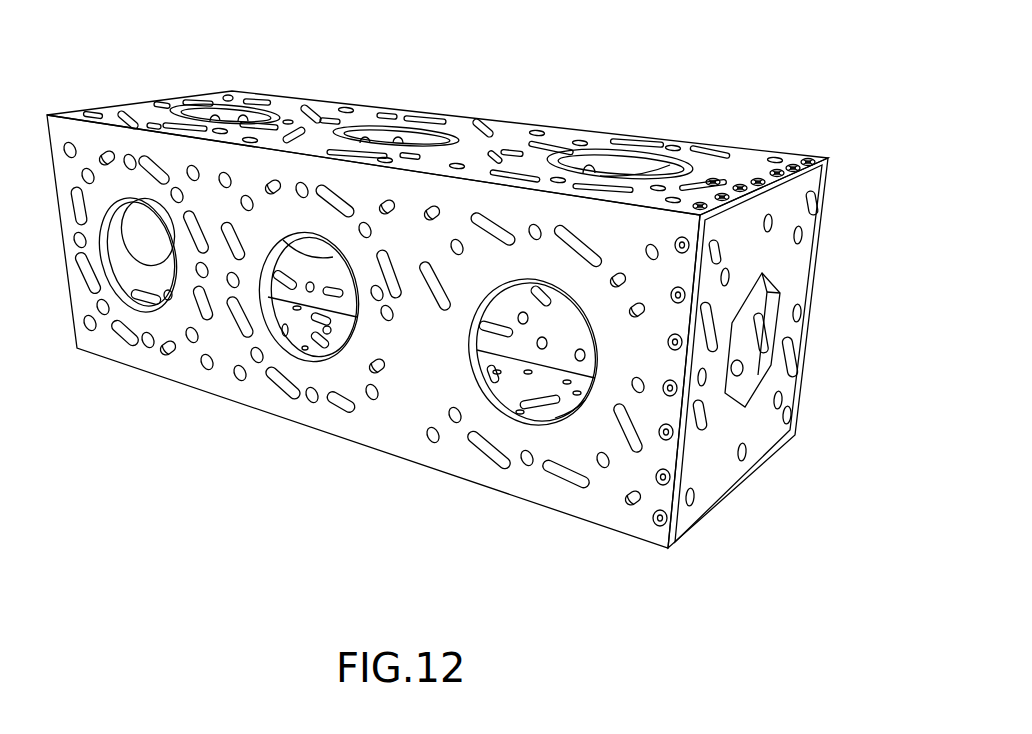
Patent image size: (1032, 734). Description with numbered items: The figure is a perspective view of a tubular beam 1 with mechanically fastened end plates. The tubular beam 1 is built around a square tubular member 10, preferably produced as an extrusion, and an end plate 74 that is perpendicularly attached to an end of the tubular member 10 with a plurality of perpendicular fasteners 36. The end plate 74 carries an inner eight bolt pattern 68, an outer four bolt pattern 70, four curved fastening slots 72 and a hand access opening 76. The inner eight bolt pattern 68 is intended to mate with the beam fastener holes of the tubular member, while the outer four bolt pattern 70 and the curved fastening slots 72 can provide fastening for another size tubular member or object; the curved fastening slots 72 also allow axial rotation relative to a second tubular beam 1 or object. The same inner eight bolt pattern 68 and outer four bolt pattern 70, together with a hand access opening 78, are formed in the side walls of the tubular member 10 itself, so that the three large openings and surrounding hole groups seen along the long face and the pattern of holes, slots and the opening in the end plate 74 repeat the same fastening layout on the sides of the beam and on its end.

The tubular beam 1 is at (446, 93).
The tubular member 10 is at (507, 478).
The perpendicular fasteners 36 is at (652, 522).
The inner eight bolt pattern 68 is at (314, 403).
The outer four bolt pattern 70 is at (236, 378).
The curved fastening slots 72 is at (272, 390).
The end plate 74 is at (742, 420).
The hand access opening 76 is at (776, 344).
The hand access opening 78 is at (262, 293).